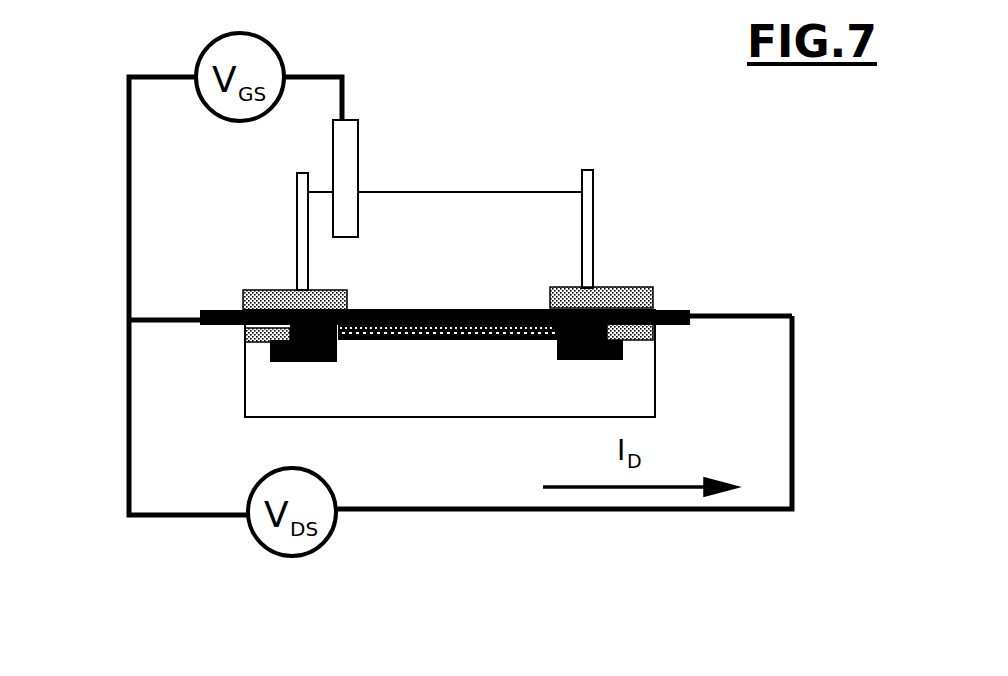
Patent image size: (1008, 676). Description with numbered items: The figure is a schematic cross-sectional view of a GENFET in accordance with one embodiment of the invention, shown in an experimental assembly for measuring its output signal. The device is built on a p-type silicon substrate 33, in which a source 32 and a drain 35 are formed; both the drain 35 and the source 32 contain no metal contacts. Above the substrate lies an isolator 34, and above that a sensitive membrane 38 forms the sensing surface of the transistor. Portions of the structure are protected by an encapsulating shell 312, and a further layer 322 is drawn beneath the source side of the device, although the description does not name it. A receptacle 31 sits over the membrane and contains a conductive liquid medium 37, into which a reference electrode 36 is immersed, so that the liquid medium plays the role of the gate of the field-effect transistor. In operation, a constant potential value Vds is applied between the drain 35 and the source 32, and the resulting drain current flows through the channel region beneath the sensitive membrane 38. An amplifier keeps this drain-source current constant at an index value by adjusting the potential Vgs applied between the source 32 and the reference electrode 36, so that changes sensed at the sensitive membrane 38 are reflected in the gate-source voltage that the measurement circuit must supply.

The receptacle 31 is at (600, 195).
The source 32 is at (218, 290).
The p-type silicon substrate 33 is at (439, 412).
The isolator 34 is at (511, 362).
The drain 35 is at (687, 291).
The reference electrode 36 is at (356, 141).
The conductive liquid medium 37 is at (458, 206).
The sensitive membrane 38 is at (469, 283).
The encapsulating shell 312 is at (630, 263).
The source electrode 322 is at (277, 419).